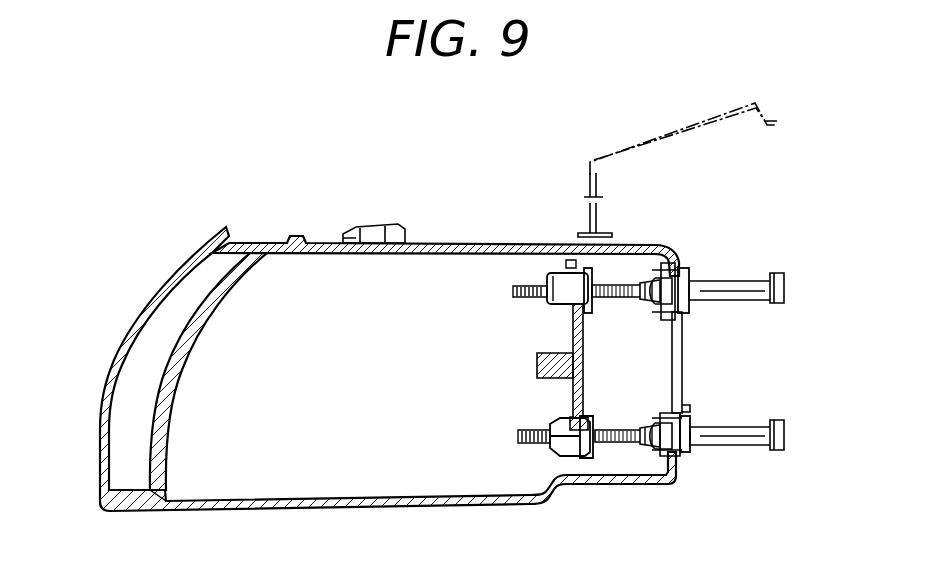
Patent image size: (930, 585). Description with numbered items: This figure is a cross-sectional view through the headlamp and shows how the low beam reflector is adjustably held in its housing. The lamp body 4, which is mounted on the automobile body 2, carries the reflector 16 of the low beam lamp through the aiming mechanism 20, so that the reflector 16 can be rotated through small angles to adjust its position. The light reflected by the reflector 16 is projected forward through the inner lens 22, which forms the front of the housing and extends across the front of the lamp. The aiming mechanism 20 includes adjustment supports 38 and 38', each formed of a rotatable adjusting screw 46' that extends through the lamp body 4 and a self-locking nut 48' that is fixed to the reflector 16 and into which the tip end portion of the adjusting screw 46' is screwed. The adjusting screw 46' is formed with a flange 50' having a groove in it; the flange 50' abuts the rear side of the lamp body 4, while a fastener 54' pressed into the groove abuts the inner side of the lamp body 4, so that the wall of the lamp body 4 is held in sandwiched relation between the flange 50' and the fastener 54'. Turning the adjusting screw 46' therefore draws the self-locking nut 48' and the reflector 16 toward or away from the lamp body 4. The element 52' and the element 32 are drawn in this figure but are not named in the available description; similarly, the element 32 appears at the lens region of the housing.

The automobile body 2 is at (620, 147).
The lamp body 4 is at (685, 395).
The reflector 16 is at (573, 340).
The aiming mechanism 20 is at (437, 342).
The inner lens 22 is at (178, 378).
The lens 32 is at (108, 372).
The adjustment support 38 is at (659, 251).
The adjustment support 38' is at (710, 402).
The adjusting screw 46' is at (691, 370).
The self-locking nut 48' is at (523, 409).
The flange 50' is at (721, 416).
The retaining plate 52' is at (618, 417).
The fastener 54' is at (663, 418).